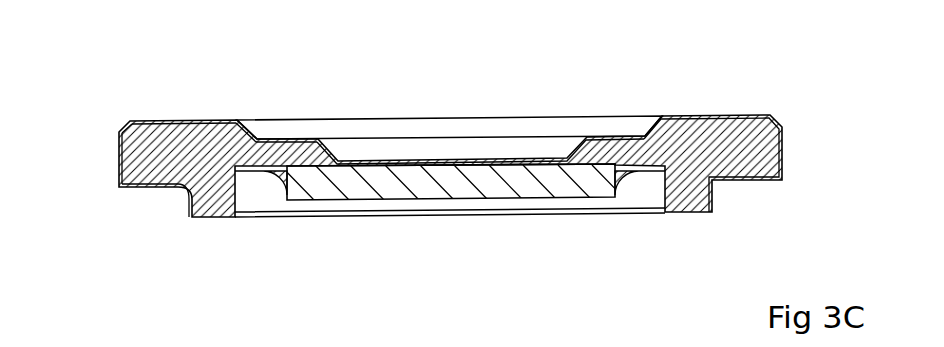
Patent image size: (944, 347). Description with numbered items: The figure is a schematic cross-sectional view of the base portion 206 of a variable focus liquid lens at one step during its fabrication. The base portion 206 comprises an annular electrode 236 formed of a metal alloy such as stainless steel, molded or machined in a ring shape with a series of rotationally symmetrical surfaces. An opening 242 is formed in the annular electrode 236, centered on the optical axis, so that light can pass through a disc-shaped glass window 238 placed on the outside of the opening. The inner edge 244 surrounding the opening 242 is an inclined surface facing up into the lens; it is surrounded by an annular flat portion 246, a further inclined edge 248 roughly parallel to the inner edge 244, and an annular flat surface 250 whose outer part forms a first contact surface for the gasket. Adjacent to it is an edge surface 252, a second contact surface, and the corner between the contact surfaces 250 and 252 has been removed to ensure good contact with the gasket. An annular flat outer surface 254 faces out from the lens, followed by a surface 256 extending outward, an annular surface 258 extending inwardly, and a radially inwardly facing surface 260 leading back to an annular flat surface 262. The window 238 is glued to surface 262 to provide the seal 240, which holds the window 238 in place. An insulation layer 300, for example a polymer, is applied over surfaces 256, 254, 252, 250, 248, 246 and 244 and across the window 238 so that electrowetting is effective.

The base portion 206 is at (100, 78).
The annular flat surface 250 is at (235, 107).
The inclined edge 248 is at (250, 135).
The annular flat portion 246 is at (296, 133).
The inner edge 244 is at (353, 149).
The opening 242 is at (505, 157).
The insulation layer 300 is at (783, 153).
The edge surface 252 is at (113, 123).
The annular flat outer surface 254 is at (150, 188).
The surface 256 is at (186, 208).
The annular surface 258 is at (210, 222).
The annular electrode 236 is at (222, 205).
The radially inwardly facing surface 260 is at (239, 192).
The annular flat surface 262 is at (308, 167).
The glass window 238 is at (523, 183).
The seal 240 is at (628, 172).